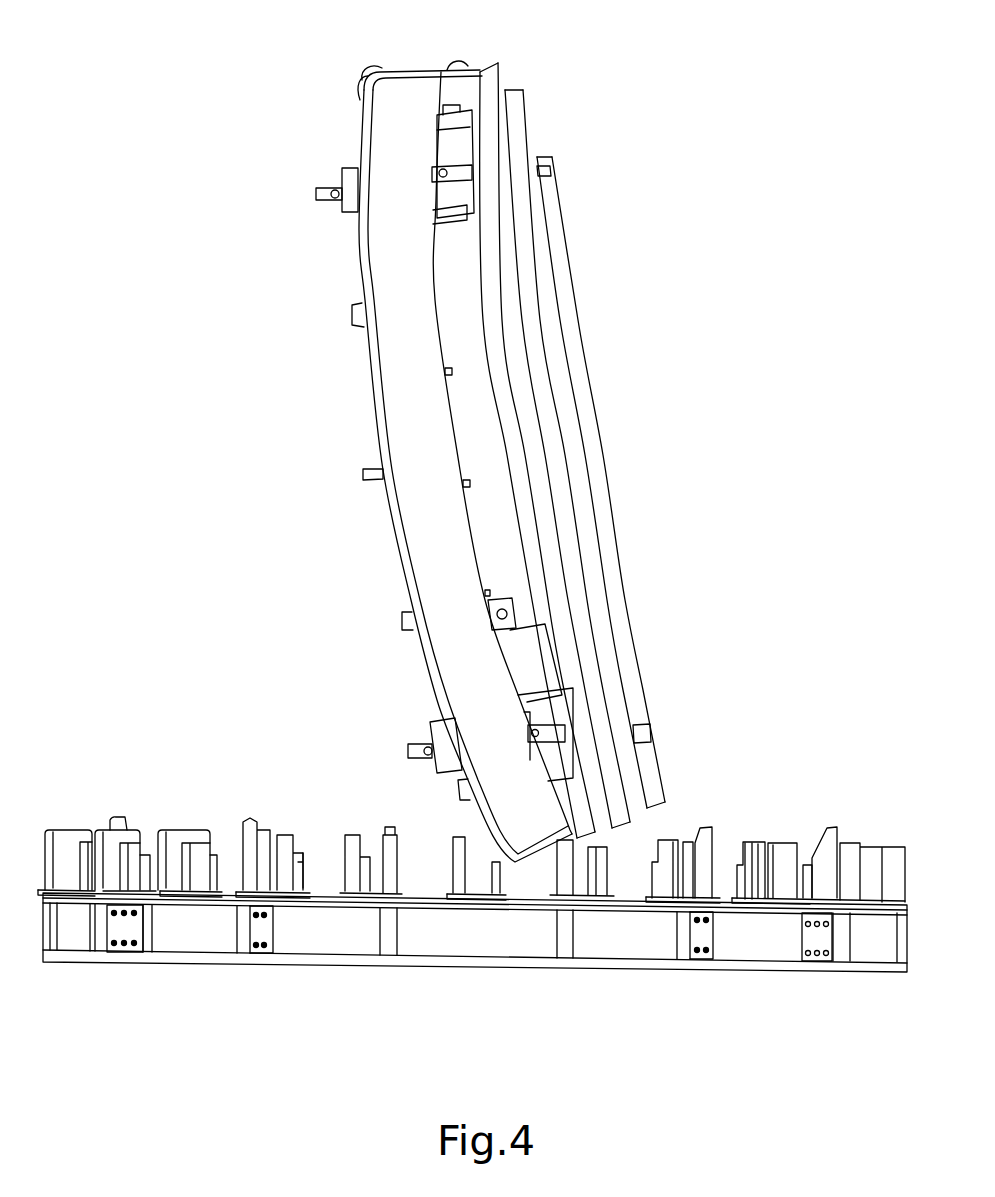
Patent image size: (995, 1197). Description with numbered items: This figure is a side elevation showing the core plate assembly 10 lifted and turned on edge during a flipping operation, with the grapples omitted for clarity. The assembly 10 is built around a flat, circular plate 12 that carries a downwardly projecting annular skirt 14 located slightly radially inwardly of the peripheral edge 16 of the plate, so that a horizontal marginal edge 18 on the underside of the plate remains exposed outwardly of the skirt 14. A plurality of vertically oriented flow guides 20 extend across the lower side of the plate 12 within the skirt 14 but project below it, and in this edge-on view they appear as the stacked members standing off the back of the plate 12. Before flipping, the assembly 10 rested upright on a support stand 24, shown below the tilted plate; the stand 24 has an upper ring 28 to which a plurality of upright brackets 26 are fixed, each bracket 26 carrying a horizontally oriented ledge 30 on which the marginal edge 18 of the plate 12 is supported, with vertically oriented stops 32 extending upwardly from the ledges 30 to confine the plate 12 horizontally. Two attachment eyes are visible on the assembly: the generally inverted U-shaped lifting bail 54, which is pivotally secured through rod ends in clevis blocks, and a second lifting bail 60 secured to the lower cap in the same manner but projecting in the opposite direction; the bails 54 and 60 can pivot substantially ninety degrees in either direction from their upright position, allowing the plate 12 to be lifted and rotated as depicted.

The core plate assembly 10 is at (628, 376).
The plate 12 is at (392, 543).
The annular skirt 14 is at (382, 240).
The peripheral edge 16 is at (373, 414).
The marginal edge 18 is at (397, 70).
The flow guides 20 is at (583, 632).
The support stand 24 is at (188, 820).
The upright brackets 26 is at (758, 848).
The upper ring 28 is at (423, 905).
The ledge 30 is at (298, 862).
The stops 32 is at (300, 855).
The lifting bail 54 is at (316, 193).
The lifting bail 60 is at (448, 170).